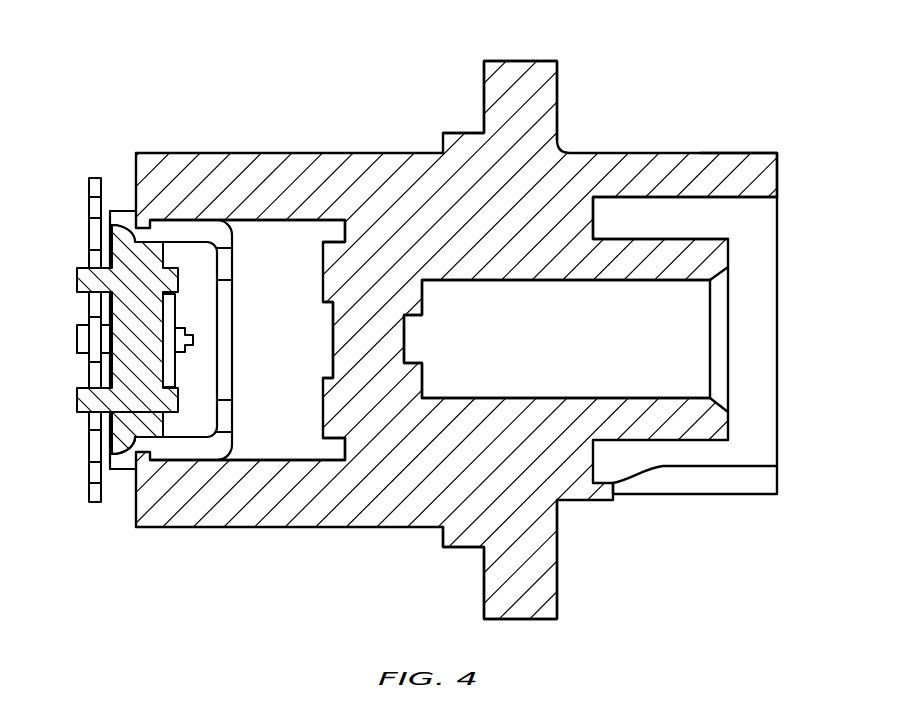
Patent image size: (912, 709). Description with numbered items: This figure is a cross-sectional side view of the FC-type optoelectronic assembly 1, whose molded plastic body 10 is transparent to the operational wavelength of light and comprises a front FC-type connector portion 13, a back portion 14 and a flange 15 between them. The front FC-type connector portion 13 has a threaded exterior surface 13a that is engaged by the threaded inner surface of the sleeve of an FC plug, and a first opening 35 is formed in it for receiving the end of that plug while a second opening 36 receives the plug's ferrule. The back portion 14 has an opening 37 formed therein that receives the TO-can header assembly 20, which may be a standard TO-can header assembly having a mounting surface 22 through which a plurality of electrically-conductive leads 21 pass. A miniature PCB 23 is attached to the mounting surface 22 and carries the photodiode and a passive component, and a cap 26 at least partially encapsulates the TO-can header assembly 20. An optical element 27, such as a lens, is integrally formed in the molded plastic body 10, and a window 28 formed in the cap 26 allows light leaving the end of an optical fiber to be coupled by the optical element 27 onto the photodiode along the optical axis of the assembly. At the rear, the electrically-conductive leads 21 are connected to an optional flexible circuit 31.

The FC-type optoelectronic assembly 1 is at (675, 88).
The molded plastic body 10 is at (778, 170).
The front FC-type connector portion 13 is at (657, 172).
The exterior surface 13a is at (737, 153).
The back portion 14 is at (237, 528).
The flange 15 is at (527, 61).
The TO-can header assembly 20 is at (120, 420).
The electrically-conductive leads 21 is at (77, 280).
The mounting surface 22 is at (165, 438).
The miniature PCB 23 is at (177, 308).
The cap 26 is at (190, 240).
The optical element 27 is at (333, 312).
The window 28 is at (222, 360).
The flexible circuit 31 is at (89, 195).
The first opening 35 is at (757, 245).
The second opening 36 is at (690, 362).
The opening 37 is at (283, 245).